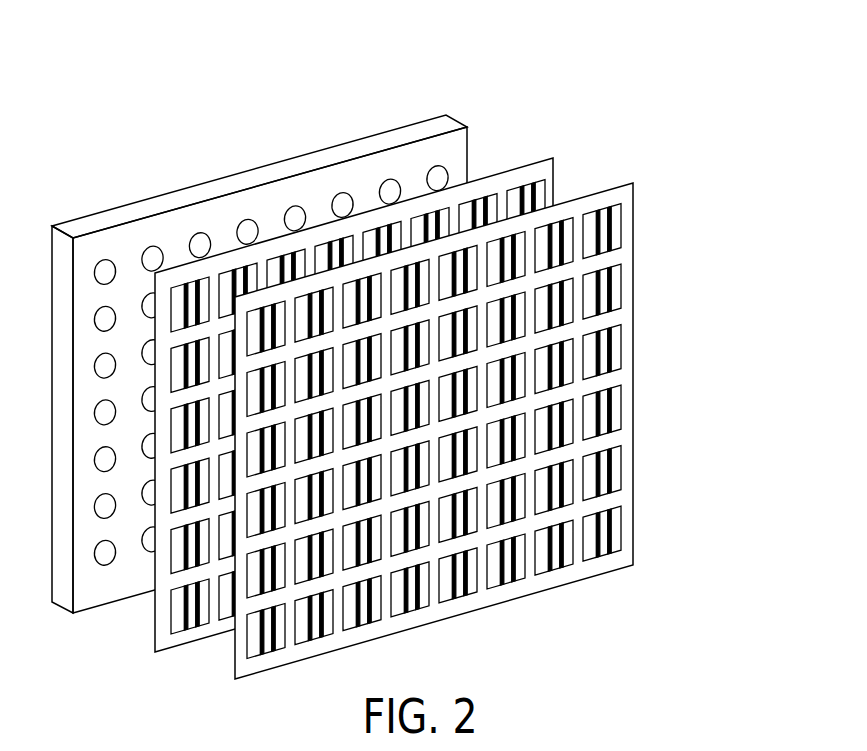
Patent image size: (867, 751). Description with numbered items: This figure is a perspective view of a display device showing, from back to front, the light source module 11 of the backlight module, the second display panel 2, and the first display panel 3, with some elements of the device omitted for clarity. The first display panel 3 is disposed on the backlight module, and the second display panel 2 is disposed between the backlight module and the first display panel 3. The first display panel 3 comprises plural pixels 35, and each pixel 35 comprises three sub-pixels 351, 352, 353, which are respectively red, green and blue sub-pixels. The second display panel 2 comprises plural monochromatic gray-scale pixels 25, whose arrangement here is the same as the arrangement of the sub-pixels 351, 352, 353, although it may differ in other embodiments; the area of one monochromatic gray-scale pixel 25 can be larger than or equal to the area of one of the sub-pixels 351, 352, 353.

The light source module 11 is at (448, 122).
The second display panel 2 is at (387, 364).
The monochromatic gray-scale pixels 25 is at (535, 185).
The first display panel 3 is at (502, 431).
The pixel 35 is at (508, 431).
The sub-pixel 351 is at (585, 555).
The sub-pixel 352 is at (600, 538).
The sub-pixel 353 is at (615, 522).